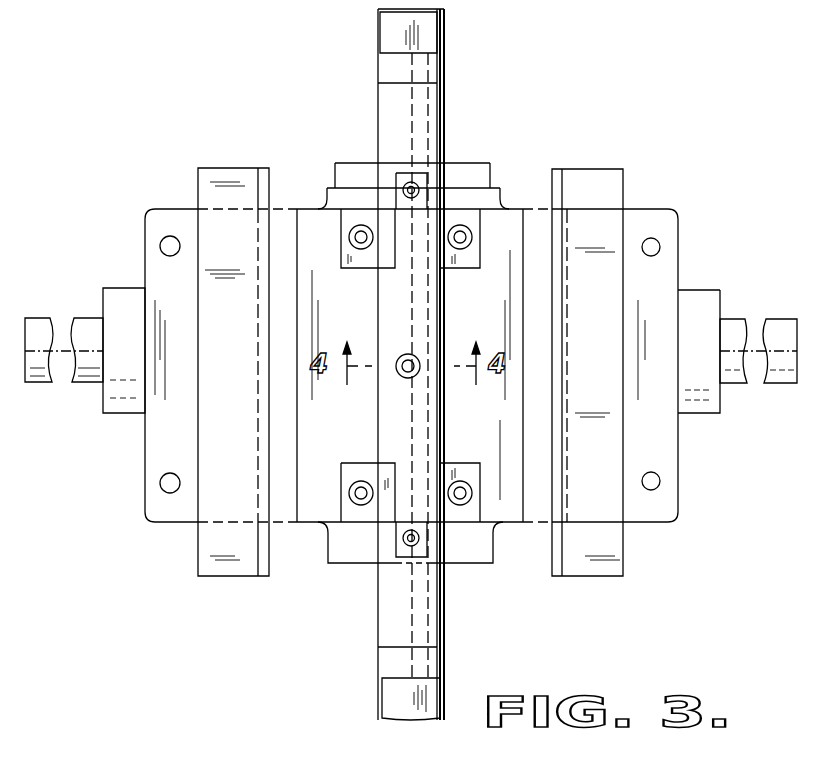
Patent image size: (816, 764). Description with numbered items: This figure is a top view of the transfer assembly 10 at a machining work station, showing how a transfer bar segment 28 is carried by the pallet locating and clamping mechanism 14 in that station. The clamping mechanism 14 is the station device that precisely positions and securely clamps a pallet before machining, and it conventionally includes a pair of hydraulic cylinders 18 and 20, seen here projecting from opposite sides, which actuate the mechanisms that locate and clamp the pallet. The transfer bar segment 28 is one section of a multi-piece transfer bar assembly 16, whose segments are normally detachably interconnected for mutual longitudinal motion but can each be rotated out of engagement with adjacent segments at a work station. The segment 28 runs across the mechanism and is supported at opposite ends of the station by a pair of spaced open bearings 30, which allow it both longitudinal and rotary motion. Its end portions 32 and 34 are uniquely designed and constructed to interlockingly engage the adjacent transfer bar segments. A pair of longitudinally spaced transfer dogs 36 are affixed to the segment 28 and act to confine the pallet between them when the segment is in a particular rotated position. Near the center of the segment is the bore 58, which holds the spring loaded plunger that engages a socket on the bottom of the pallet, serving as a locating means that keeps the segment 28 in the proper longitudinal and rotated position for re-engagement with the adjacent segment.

The transfer assembly 10 is at (587, 103).
The pallet locating and clamping mechanism 14 is at (626, 184).
The multi-piece transfer bar assembly 16 is at (445, 127).
The hydraulic cylinder 18 is at (778, 320).
The hydraulic cylinder 20 is at (44, 318).
The transfer bar segment 28 is at (378, 115).
The open bearings 30 is at (362, 268).
The end portion 32 is at (442, 33).
The end portion 34 is at (382, 718).
The transfer dogs 36 is at (428, 182).
The bore 58 is at (410, 352).